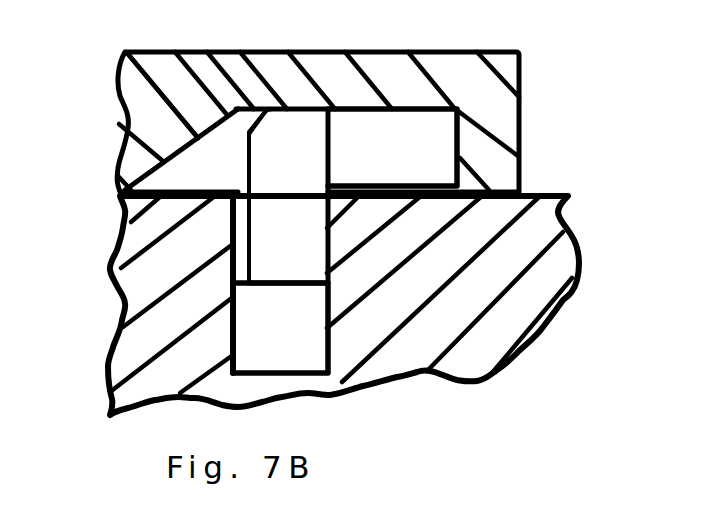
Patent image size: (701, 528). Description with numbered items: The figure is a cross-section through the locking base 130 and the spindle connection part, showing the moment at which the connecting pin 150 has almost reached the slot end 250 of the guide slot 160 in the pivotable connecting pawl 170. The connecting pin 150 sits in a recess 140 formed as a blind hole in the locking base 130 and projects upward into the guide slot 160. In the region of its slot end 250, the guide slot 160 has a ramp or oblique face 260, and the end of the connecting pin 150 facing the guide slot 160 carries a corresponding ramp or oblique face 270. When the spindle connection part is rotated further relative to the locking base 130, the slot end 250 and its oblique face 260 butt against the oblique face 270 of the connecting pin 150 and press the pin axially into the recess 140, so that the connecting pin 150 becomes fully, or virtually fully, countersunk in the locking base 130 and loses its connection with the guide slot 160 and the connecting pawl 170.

The locking base 130 is at (537, 243).
The recess 140 is at (258, 331).
The connecting pin 150 is at (283, 187).
The guide slot 160 is at (407, 170).
The pivotable connecting pawl 170 is at (497, 103).
The slot end 250 is at (228, 108).
The ramp or oblique face 260 is at (182, 150).
The ramp or oblique face 270 is at (263, 126).